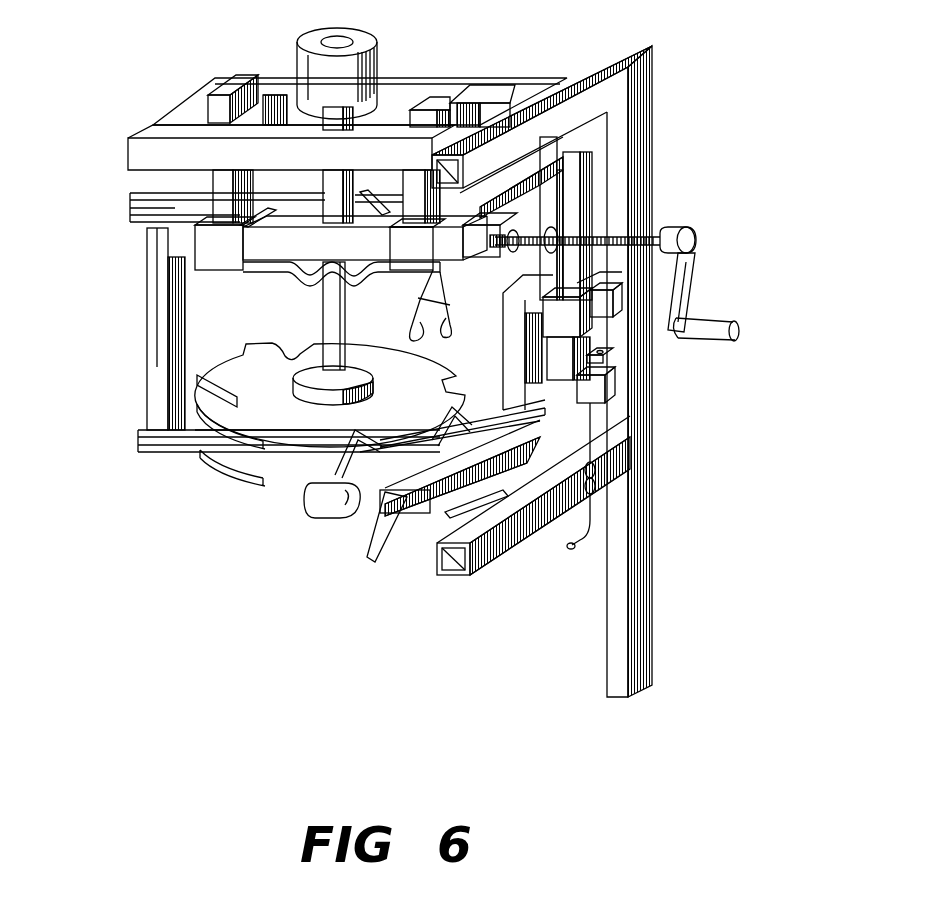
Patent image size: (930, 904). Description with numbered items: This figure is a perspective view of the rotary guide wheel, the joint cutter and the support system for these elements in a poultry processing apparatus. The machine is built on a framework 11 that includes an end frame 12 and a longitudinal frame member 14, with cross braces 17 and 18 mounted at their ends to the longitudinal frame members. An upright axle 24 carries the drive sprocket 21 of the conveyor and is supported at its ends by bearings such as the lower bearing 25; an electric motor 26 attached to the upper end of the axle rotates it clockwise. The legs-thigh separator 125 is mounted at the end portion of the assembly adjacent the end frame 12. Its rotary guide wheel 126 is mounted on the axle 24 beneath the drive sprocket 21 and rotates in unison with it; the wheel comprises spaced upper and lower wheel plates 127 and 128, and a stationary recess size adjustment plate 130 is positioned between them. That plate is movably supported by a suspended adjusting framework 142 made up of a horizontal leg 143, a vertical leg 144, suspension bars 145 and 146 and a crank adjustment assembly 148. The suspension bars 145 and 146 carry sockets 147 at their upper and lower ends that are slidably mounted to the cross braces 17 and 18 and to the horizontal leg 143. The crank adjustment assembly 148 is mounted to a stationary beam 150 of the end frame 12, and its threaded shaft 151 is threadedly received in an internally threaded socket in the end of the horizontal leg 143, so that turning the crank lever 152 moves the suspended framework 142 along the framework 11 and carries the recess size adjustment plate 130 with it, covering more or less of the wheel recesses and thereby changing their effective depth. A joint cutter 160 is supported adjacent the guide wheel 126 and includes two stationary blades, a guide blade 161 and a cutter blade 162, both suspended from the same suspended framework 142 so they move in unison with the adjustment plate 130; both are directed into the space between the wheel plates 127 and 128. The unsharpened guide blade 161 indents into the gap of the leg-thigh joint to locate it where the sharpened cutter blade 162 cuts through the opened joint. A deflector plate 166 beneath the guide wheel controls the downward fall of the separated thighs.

The framework 11 is at (660, 66).
The end frame 12 is at (652, 150).
The longitudinal frame member 14 is at (515, 80).
The cross brace 17 is at (275, 93).
The cross brace 18 is at (466, 88).
The drive sprocket 21 is at (315, 268).
The upright axle 24 is at (328, 181).
The lower bearing 25 is at (328, 520).
The electric motor 26 is at (345, 38).
The legs-thigh separator 125 is at (122, 462).
The rotary guide wheel 126 is at (268, 338).
The upper wheel plate 127 is at (418, 395).
The lower wheel plate 128 is at (258, 480).
The recess size adjustment plate 130 is at (196, 432).
The suspended adjusting framework 142 is at (146, 242).
The horizontal leg 143 is at (338, 252).
The vertical leg 144 is at (155, 291).
The suspension bar 145 is at (408, 180).
The suspension bar 146 is at (225, 180).
The socket 147 is at (220, 106).
The crank adjustment assembly 148 is at (682, 208).
The stationary beam 150 is at (548, 157).
The lead screw 151 is at (596, 235).
The crank lever 152 is at (684, 293).
The joint cutter 160 is at (538, 445).
The guide blade 161 is at (497, 410).
The cutter blade 162 is at (492, 387).
The deflector plate 166 is at (390, 562).